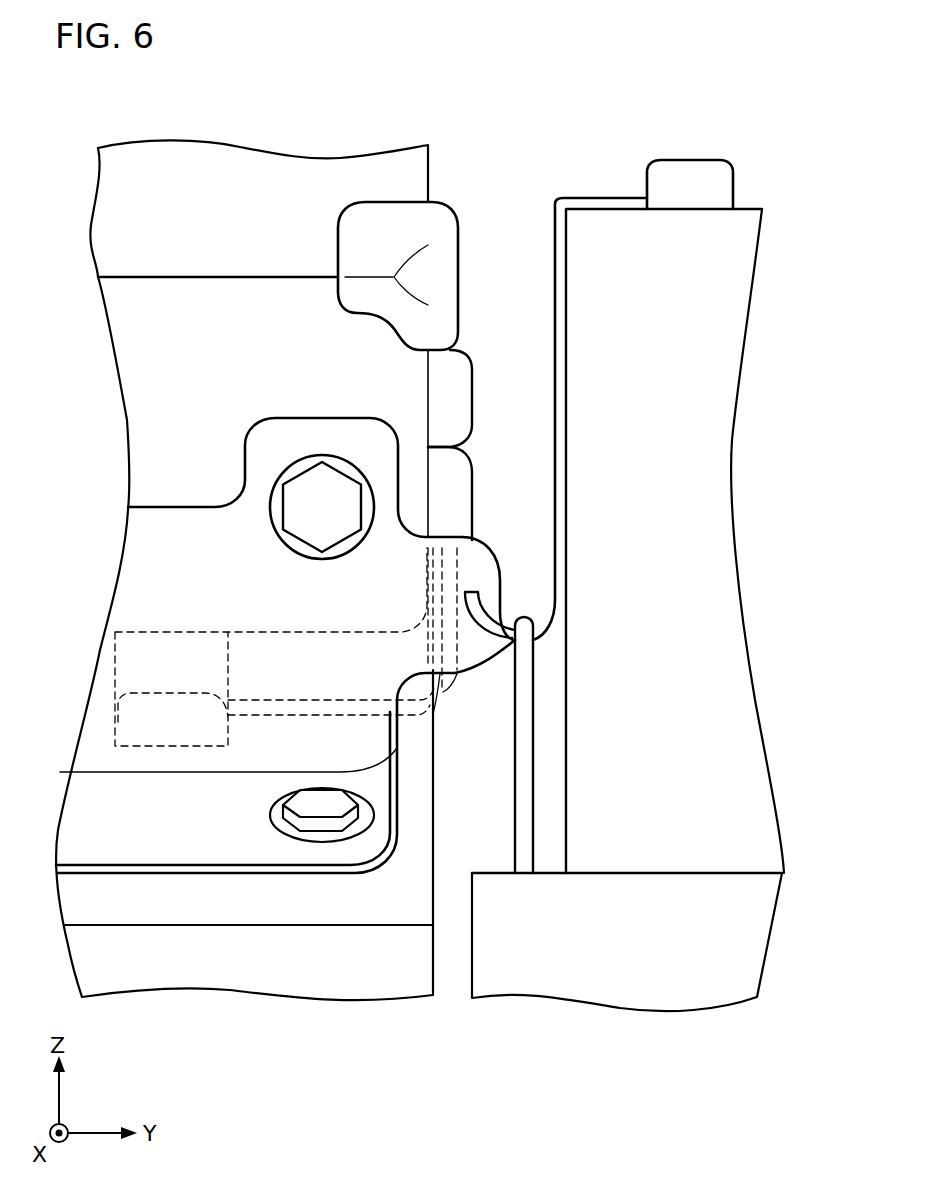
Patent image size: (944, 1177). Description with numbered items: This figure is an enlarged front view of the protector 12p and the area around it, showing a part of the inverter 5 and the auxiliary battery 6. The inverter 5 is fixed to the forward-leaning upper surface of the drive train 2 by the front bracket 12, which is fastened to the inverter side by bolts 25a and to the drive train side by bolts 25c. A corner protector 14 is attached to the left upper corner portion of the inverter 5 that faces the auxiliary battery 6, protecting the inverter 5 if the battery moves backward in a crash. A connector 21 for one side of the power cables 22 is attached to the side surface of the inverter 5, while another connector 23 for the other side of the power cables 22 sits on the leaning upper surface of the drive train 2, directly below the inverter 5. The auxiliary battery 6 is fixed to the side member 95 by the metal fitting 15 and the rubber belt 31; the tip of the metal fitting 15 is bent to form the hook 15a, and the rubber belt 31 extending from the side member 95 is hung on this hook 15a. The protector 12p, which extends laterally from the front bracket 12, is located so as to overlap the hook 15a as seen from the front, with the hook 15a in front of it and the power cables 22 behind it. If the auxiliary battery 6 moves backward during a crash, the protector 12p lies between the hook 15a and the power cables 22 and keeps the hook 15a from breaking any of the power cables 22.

The drive train 2 is at (303, 980).
The inverter 5 is at (133, 349).
The auxiliary battery 6 is at (712, 430).
The front bracket 12 is at (133, 571).
The protector 12p is at (486, 563).
The corner protector 14 is at (443, 233).
The metal fitting 15 is at (597, 205).
The hook 15a is at (468, 620).
The connector 21 is at (457, 387).
The power cables 22 is at (444, 692).
The connector 23 is at (132, 724).
The bolts 25a is at (325, 490).
The bolts 25c is at (312, 808).
The rubber belt 31 is at (518, 826).
The side member 95 is at (612, 980).